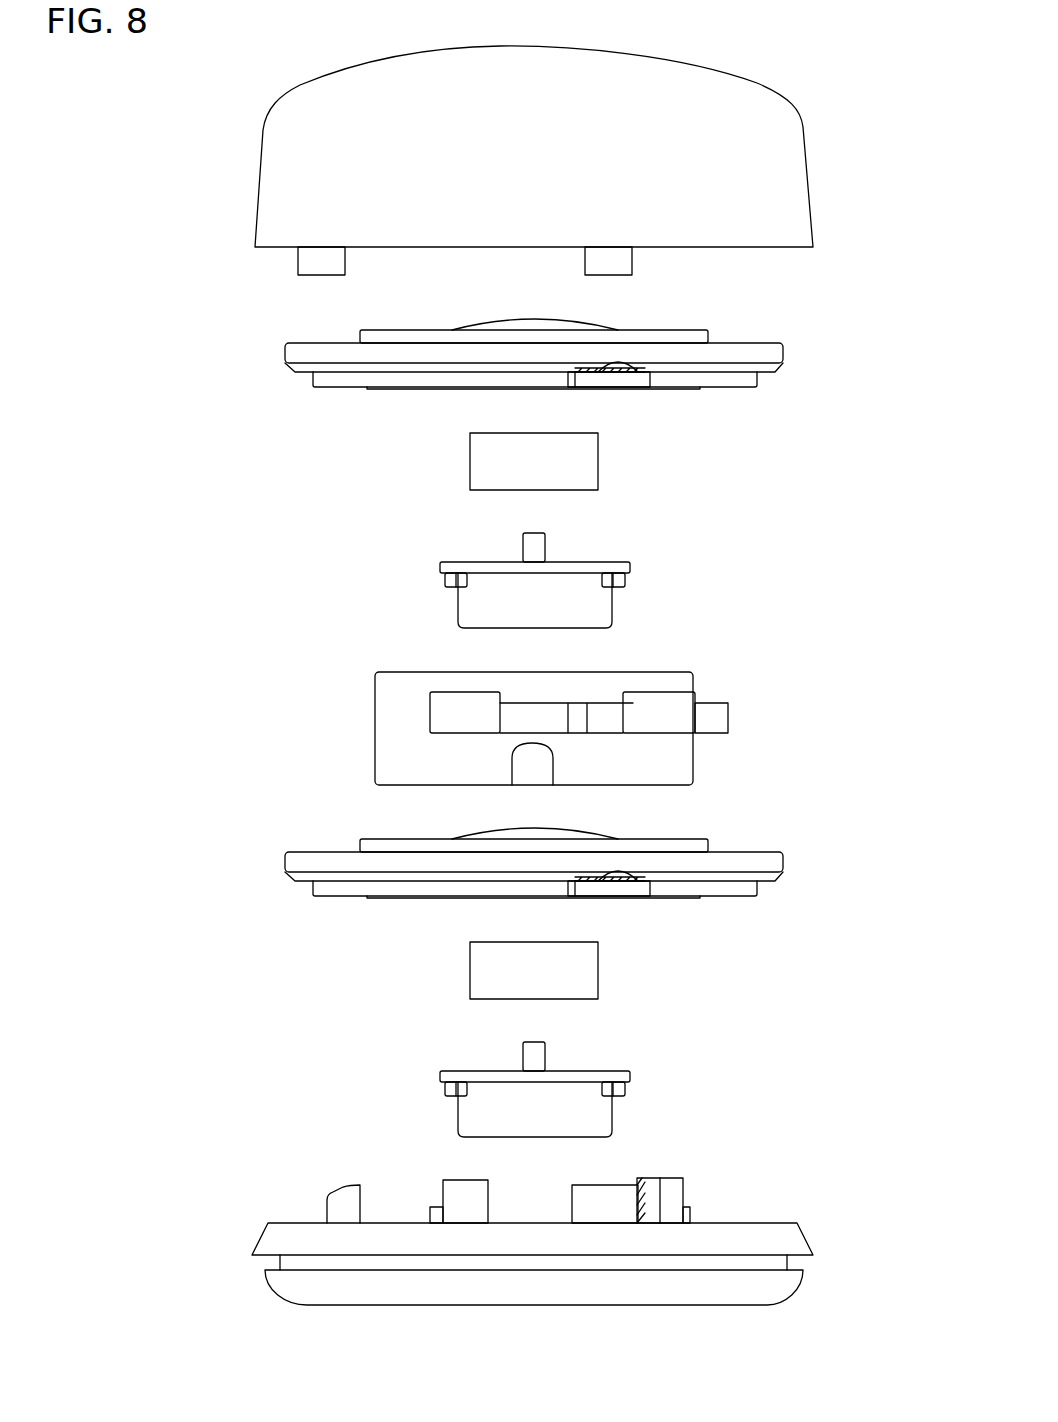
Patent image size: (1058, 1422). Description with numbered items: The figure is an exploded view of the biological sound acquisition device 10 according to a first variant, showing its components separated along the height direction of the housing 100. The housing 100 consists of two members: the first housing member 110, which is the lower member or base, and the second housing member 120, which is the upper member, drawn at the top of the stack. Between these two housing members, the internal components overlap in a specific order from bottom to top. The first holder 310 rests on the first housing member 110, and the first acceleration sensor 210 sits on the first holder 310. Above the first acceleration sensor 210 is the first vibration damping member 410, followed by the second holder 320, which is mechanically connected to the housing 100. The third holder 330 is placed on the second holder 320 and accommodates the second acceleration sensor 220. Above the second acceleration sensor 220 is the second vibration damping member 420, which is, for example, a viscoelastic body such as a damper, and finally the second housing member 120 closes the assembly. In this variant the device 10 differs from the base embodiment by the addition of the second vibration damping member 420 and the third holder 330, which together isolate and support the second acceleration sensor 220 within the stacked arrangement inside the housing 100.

The biological sound acquisition device 10 is at (228, 51).
The housing 100 is at (120, 640).
The first housing member 110 is at (280, 1244).
The second housing member 120 is at (280, 206).
The first acceleration sensor 210 is at (578, 972).
The second acceleration sensor 220 is at (578, 463).
The first holder 310 is at (588, 1115).
The second holder 320 is at (712, 719).
The third holder 330 is at (588, 606).
The first vibration damping member 410 is at (763, 862).
The second vibration damping member 420 is at (763, 353).